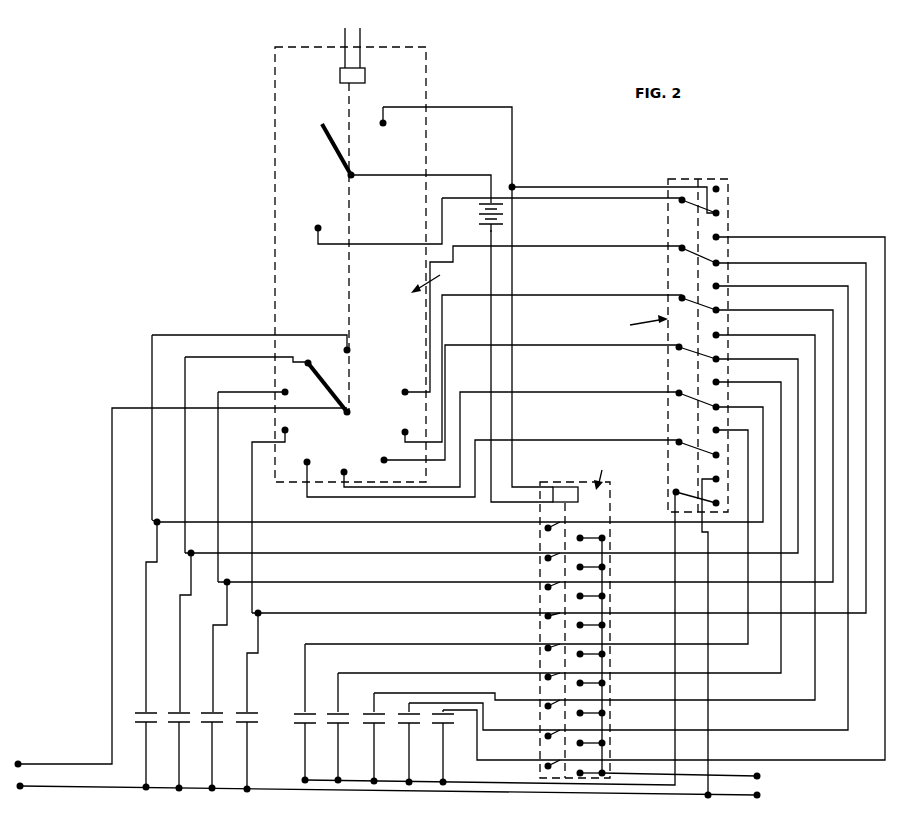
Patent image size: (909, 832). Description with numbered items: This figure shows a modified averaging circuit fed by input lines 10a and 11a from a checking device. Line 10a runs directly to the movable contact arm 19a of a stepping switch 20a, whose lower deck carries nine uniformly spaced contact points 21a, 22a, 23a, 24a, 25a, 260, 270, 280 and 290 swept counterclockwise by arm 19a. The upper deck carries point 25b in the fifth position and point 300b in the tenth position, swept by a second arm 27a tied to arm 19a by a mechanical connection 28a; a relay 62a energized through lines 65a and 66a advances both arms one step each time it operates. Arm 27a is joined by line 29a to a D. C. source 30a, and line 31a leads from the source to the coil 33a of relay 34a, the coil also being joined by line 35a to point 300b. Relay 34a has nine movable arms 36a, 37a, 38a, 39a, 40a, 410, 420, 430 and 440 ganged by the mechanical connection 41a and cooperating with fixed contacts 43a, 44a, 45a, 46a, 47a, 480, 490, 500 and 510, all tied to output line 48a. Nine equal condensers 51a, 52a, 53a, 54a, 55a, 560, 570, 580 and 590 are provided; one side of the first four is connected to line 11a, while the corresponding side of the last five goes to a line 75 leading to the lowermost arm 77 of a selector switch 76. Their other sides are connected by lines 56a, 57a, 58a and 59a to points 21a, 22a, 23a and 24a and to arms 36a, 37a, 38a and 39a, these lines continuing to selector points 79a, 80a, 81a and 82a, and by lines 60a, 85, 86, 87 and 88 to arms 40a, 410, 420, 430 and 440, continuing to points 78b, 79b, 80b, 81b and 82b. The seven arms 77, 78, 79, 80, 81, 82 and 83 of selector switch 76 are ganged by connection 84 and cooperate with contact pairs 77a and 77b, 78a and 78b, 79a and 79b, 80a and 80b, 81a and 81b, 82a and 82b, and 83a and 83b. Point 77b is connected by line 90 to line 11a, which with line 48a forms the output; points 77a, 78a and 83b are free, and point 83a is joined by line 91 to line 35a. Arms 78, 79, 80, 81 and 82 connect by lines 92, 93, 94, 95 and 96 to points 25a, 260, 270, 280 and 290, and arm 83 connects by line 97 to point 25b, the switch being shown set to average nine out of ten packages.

The input line 10a is at (59, 764).
The input line 11a is at (121, 786).
The movable contact arm 19a is at (268, 487).
The stepping switch 20a is at (441, 280).
The arm contact point 21a is at (350, 347).
The arm contact point 22a is at (268, 446).
The arm contact point 23a is at (283, 391).
The arm contact point 24a is at (281, 431).
The arm contact point 25a is at (308, 458).
The arm-contact point 25b is at (320, 225).
The stepping switch arm 27a is at (328, 139).
The mechanical connection 28a is at (351, 303).
The line 29a is at (453, 175).
The D.C. source 30a is at (507, 214).
The line 31a is at (491, 283).
The relay coil 33a is at (559, 486).
The relay 34a is at (590, 615).
The line 35a is at (488, 105).
The movable contact arm 36a is at (546, 527).
The movable contact arm 37a is at (546, 557).
The movable contact arm 38a is at (546, 589).
The movable contact arm 39a is at (546, 618).
The movable contact arm 40a is at (546, 650).
The mechanical connection 41a is at (568, 518).
The fixed contact 43a is at (583, 537).
The fixed contact 44a is at (578, 568).
The fixed contact 45a is at (583, 595).
The fixed contact 46a is at (583, 624).
The fixed contact 47a is at (583, 653).
The output line 48a is at (717, 773).
The condenser 51a is at (140, 710).
The condenser 52a is at (175, 710).
The condenser 53a is at (207, 710).
The condenser 54a is at (243, 710).
The condenser 55a is at (298, 712).
The line 56a is at (281, 522).
The line 57a is at (305, 549).
The line 58a is at (305, 579).
The line 59a is at (325, 609).
The line 60a is at (397, 644).
The relay 62a is at (366, 76).
The line 65a is at (343, 41).
The line 66a is at (362, 41).
The line 75 is at (462, 781).
The selector switch 76 is at (666, 345).
The movable contact arm 77 is at (686, 483).
The contact point 77a is at (720, 503).
The contact point 77b is at (720, 479).
The movable contact arm 78 is at (686, 435).
The contact point 78a is at (720, 455).
The contact point 78b is at (710, 423).
The movable contact arm 79 is at (686, 384).
The contact point 79a is at (720, 407).
The contact point 79b is at (720, 383).
The movable contact arm 80 is at (682, 345).
The contact point 80a is at (720, 360).
The contact point 80b is at (720, 336).
The movable contact arm 81 is at (684, 296).
The contact point 81a is at (720, 311).
The contact point 81b is at (720, 287).
The movable contact arm 82 is at (695, 247).
The contact point 82a is at (720, 263).
The contact point 82b is at (720, 237).
The movable contact arm 83 is at (694, 213).
The contact point 83a is at (720, 212).
The contact point 83b is at (720, 187).
The connection 84 is at (698, 363).
The line 85 is at (405, 673).
The line 86 is at (396, 700).
The line 87 is at (445, 703).
The line 88 is at (479, 762).
The line 90 is at (719, 639).
The line 91 is at (577, 186).
The line 92 is at (549, 441).
The line 93 is at (539, 392).
The line 94 is at (552, 345).
The line 95 is at (570, 298).
The line 96 is at (596, 246).
The line 97 is at (621, 200).
The arm contact point 260 is at (341, 460).
The arm contact point 270 is at (382, 457).
The arm contact point 280 is at (402, 430).
The arm contact point 290 is at (401, 393).
The arm-contact point 300b is at (383, 134).
The contact 410 is at (546, 679).
The contact 420 is at (546, 708).
The contact 430 is at (546, 738).
The contact 440 is at (546, 768).
The contact 480 is at (583, 682).
The contact 490 is at (583, 712).
The contact 500 is at (583, 742).
The contact 510 is at (583, 772).
The capacitor 560 is at (333, 712).
The capacitor 570 is at (369, 712).
The capacitor 580 is at (405, 727).
The capacitor 590 is at (440, 727).